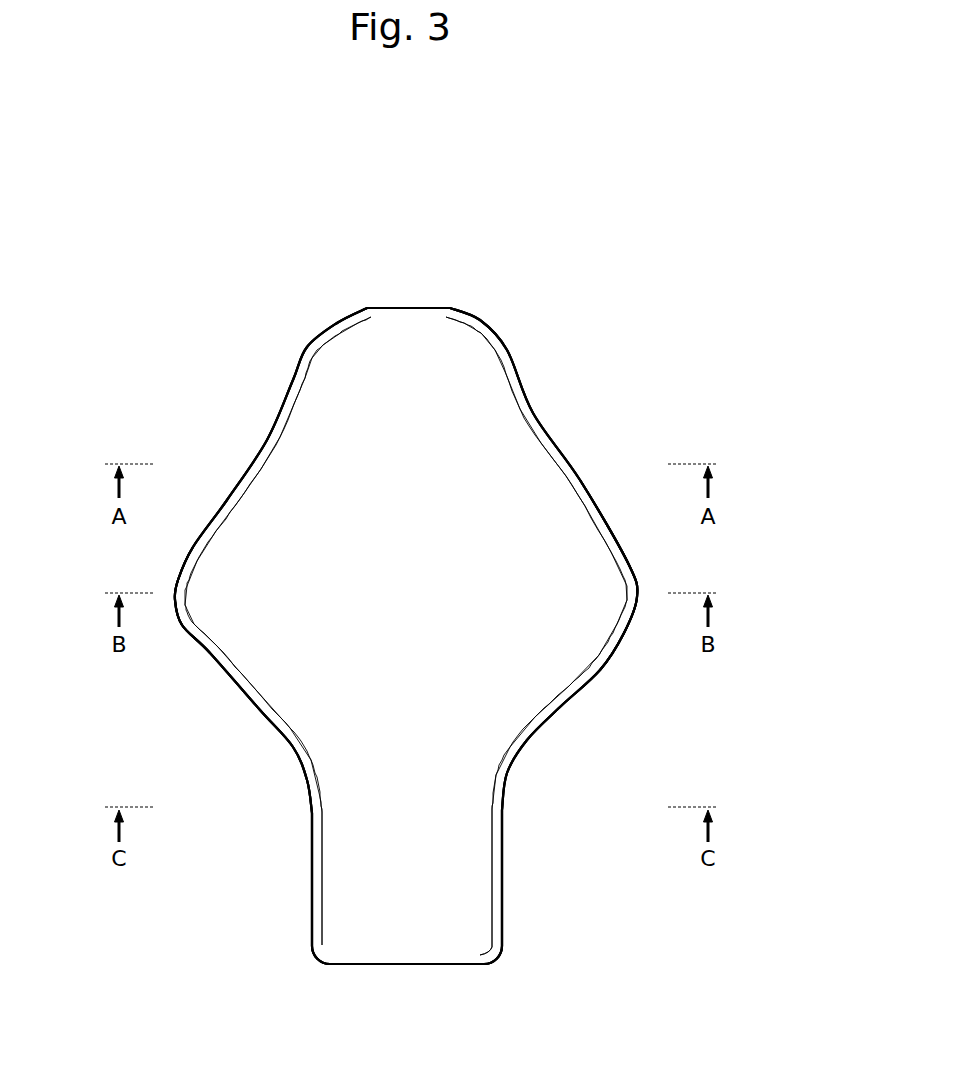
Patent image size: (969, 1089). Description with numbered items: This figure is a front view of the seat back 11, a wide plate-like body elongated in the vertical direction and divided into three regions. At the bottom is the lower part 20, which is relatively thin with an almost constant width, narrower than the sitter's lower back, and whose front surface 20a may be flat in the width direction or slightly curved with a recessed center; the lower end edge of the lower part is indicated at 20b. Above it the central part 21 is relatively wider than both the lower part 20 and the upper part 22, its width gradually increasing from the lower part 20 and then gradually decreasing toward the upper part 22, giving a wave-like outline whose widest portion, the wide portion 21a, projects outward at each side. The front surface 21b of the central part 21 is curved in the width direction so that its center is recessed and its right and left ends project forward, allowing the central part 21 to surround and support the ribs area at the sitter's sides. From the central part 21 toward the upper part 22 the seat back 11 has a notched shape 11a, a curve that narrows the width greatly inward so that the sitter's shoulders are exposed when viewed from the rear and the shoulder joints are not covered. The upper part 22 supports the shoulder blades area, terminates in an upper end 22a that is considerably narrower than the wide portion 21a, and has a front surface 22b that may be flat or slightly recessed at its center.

The seat back 11 is at (472, 248).
The notched shape 11a is at (263, 440).
The lower part 20 is at (457, 838).
The front surface of the lower part 20a is at (457, 905).
The lower end edge 20b is at (411, 967).
The central part 21 is at (580, 633).
The wide portion 21a is at (172, 596).
The front surface of the central part 21b is at (443, 648).
The upper part 22 is at (504, 398).
The upper end 22a is at (404, 307).
The front surface of the upper part 22b is at (455, 437).